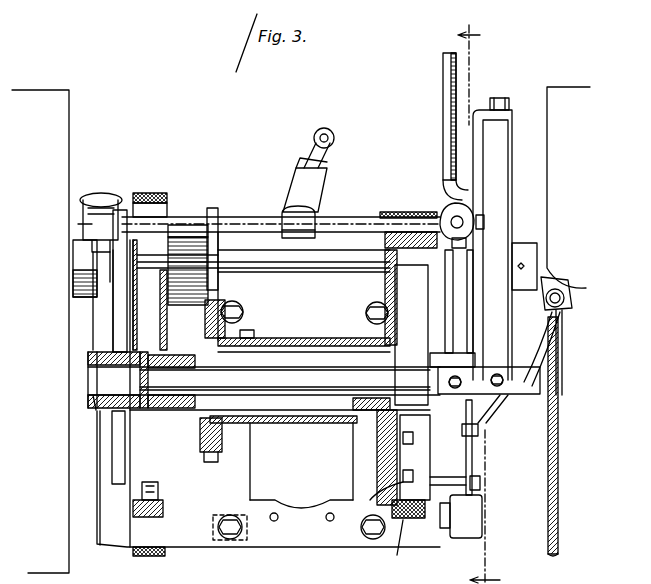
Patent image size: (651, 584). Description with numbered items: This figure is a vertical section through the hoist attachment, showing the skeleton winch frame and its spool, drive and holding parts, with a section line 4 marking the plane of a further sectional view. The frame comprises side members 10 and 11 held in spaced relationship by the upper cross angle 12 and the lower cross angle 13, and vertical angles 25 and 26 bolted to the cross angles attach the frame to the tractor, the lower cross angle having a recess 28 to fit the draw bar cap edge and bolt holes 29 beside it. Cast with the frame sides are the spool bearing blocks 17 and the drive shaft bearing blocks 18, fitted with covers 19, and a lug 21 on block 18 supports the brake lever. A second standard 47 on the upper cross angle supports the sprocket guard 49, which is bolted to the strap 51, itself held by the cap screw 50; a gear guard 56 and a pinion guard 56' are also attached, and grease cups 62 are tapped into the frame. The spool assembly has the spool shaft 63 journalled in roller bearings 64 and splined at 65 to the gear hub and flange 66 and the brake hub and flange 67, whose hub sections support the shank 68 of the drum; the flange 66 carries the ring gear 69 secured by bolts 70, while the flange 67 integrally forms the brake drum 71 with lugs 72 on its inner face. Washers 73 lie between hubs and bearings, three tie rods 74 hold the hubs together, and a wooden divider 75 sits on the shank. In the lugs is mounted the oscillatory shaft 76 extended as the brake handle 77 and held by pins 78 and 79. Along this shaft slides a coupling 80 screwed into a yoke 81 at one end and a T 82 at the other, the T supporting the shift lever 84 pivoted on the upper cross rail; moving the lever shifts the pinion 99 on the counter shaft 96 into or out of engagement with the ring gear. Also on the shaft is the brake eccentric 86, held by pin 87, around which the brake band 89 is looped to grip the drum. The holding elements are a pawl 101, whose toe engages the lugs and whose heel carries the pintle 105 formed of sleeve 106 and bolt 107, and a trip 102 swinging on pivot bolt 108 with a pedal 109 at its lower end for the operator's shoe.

The section line 4 is at (472, 69).
The side member 10 is at (450, 548).
The side member 11 is at (100, 437).
The upper cross angle 12 is at (330, 322).
The lower cross angle 13 is at (260, 542).
The spool bearing block 17 is at (100, 415).
The drive shaft bearing block 18 is at (84, 258).
The cover 19 is at (470, 356).
The lug 21 is at (127, 206).
The vertical angle 25 is at (365, 438).
The vertical angle 26 is at (254, 436).
The recess 28 is at (300, 504).
The bolt holes 29 is at (318, 531).
The second standard 47 is at (478, 157).
The sprocket guard 49 is at (502, 208).
The cap screw 50 is at (504, 400).
The strap 51 is at (545, 384).
The gear guard 56 is at (150, 374).
The pinion guard 56' is at (304, 305).
The grease cup 62 is at (484, 226).
The spool shaft 63 is at (266, 384).
The roller bearing 64 is at (100, 367).
The spline 65 is at (205, 393).
The gear hub and flange 66 is at (171, 381).
The brake hub and flange 67 is at (352, 405).
The drum shank 68 is at (295, 352).
The ring gear 69 is at (150, 505).
The bolts 70 is at (160, 490).
The brake drum 71 is at (396, 546).
The lugs 72 is at (406, 327).
The spacing and grease retaining washers 73 is at (410, 352).
The tie rods 74 is at (250, 348).
The divider 75 is at (222, 446).
The oscillatory shaft 76 is at (197, 225).
The brake handle 77 is at (458, 72).
The pin 78 is at (80, 224).
The pin 79 is at (438, 220).
The coupling 80 is at (266, 216).
The yoke 81 is at (217, 208).
The T 82 is at (316, 212).
The shift lever 84 is at (323, 184).
The brake eccentric 86 is at (385, 238).
The pin 87 is at (385, 211).
The brake band 89 is at (405, 520).
The counter shaft 96 is at (360, 272).
The pinion 99 is at (190, 215).
The pawl 101 is at (402, 432).
The trip 102 is at (472, 452).
The pintle 105 is at (483, 483).
The sleeve 106 is at (455, 478).
The bolt 107 is at (370, 503).
The pivot bolt 108 is at (478, 430).
The pedal 109 is at (482, 512).